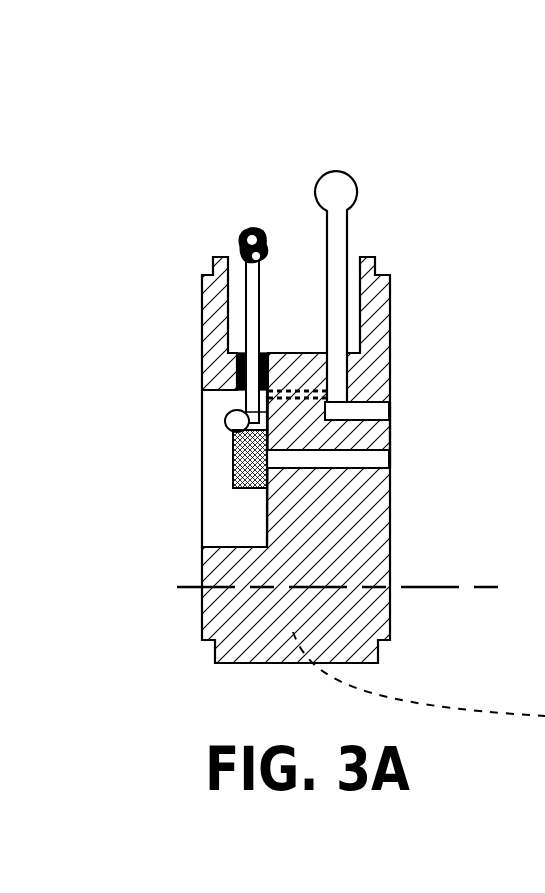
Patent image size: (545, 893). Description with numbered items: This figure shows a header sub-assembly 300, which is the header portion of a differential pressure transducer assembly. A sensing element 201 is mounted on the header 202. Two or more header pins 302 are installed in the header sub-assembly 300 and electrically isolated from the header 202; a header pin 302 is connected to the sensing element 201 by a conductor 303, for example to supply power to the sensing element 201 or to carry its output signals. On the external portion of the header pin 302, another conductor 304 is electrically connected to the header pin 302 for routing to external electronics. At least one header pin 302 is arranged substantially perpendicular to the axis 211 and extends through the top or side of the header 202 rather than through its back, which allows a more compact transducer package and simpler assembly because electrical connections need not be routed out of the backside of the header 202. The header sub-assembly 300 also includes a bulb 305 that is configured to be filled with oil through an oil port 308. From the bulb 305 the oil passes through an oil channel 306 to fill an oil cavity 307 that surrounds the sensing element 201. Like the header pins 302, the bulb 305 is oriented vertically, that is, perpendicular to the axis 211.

The header sub-assembly 300 is at (331, 101).
The sensing element 201 is at (233, 466).
The header 202 is at (358, 566).
The axis 211 is at (408, 593).
The header pin 302 is at (252, 298).
The conductor 303 is at (222, 430).
The conductor 304 is at (237, 246).
The bulb 305 is at (347, 222).
The oil channel 306 is at (313, 394).
The oil cavity 307 is at (217, 515).
The oil port 308 is at (373, 408).